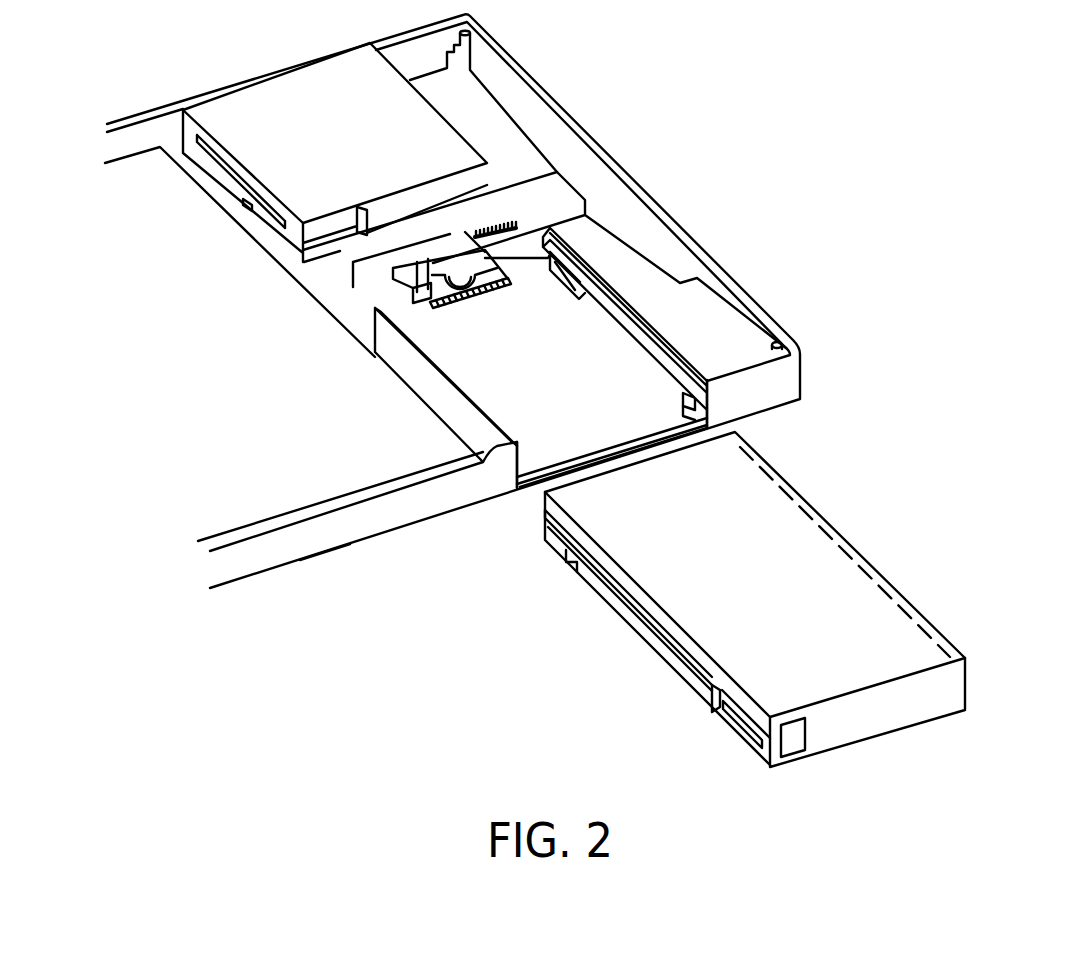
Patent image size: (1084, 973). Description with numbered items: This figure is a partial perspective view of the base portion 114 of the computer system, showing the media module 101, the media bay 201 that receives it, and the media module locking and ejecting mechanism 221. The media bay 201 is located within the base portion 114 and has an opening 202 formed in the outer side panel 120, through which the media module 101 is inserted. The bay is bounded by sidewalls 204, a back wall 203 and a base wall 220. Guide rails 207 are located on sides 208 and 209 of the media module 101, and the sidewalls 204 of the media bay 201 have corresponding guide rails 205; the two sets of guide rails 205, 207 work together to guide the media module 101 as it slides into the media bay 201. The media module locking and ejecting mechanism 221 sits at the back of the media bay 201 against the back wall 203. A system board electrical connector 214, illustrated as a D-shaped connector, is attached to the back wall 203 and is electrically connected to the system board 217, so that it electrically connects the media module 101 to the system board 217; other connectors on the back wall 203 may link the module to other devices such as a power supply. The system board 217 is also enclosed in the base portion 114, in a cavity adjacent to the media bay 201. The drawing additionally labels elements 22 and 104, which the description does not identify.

The base portion 114 is at (628, 140).
The system board 217 is at (258, 362).
The base wall 220 is at (540, 359).
The media module locking and ejecting mechanism 221 is at (452, 263).
The back wall 203 is at (505, 230).
The system board electrical connector 214 is at (441, 305).
The sidewalls 204 is at (652, 315).
The media bay 201 is at (562, 312).
The guide rails 205 is at (687, 353).
The bottom rail 22 is at (630, 460).
The opening 202 is at (537, 462).
The outer side panel 120 is at (325, 532).
The media module 101 is at (920, 605).
The guide rails 207 is at (820, 530).
The side 209 is at (857, 538).
The side 208 is at (652, 640).
The connector 104 is at (797, 740).